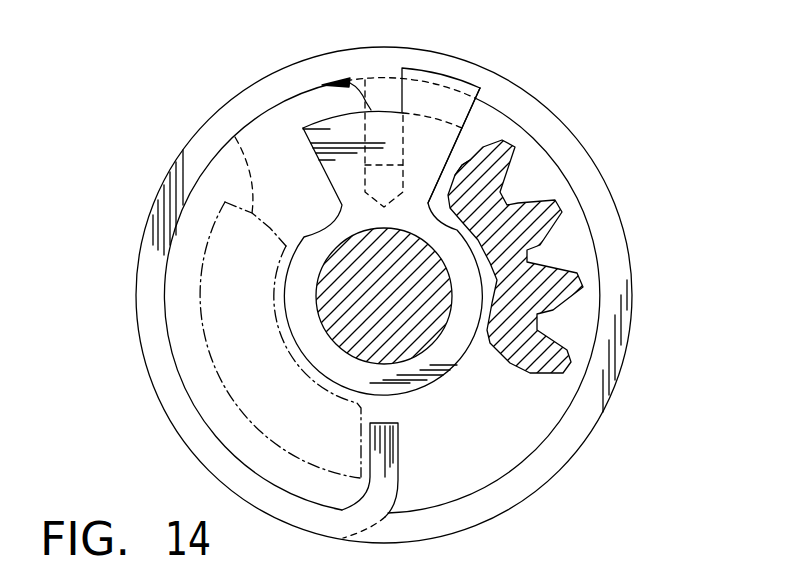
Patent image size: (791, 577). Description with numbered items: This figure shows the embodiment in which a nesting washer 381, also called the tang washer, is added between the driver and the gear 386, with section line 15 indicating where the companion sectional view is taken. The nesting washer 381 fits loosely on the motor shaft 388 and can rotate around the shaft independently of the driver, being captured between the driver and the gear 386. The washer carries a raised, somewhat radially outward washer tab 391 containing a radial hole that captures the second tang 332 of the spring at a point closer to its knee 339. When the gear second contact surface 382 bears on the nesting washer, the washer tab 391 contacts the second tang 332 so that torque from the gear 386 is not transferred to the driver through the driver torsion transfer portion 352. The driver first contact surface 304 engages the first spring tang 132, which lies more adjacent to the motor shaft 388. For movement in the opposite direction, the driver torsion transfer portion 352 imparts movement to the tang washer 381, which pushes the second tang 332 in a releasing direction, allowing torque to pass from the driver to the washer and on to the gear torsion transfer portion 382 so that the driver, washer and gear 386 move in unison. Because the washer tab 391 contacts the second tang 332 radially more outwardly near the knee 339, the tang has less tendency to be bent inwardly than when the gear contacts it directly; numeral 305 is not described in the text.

The housing bore wall 305 is at (235, 137).
The driver torsion transfer portion 352 is at (195, 305).
The driver first contact surface 304 is at (365, 412).
The motor shaft 388 is at (423, 322).
The gear 386 is at (568, 236).
The gear second contact surface 382 is at (462, 163).
The nesting washer 381 is at (443, 145).
The washer tab 391 is at (440, 97).
The second tang 332 is at (385, 98).
The knee 339 is at (377, 72).
The first spring tang 132 is at (392, 463).
The section line 15- 15 is at (463, 16).